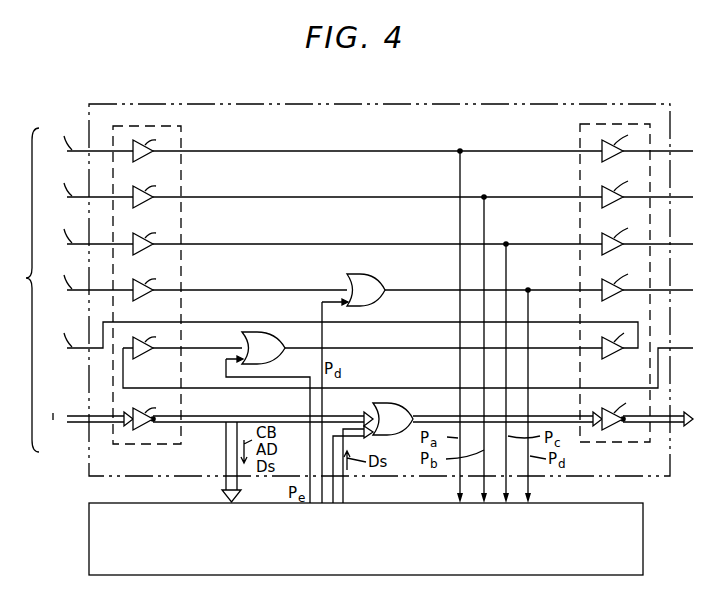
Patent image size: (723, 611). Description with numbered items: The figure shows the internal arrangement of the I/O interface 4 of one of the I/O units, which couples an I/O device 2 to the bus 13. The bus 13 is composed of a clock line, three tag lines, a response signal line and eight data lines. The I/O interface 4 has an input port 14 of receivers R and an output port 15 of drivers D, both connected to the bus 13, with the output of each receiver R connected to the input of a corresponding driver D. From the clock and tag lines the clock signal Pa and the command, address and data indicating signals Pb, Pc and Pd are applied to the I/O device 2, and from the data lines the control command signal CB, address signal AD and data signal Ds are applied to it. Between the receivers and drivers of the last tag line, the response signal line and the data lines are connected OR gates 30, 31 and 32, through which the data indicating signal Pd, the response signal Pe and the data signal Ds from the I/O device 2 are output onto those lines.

The I/O device 2 is at (646, 516).
The I/O interface 4 is at (512, 104).
The bus 13 is at (41, 284).
The input port 14 is at (183, 132).
The output port 15 is at (578, 133).
The OR gate 30 is at (372, 275).
The OR gate 31 is at (268, 332).
The OR gate 32 is at (405, 403).